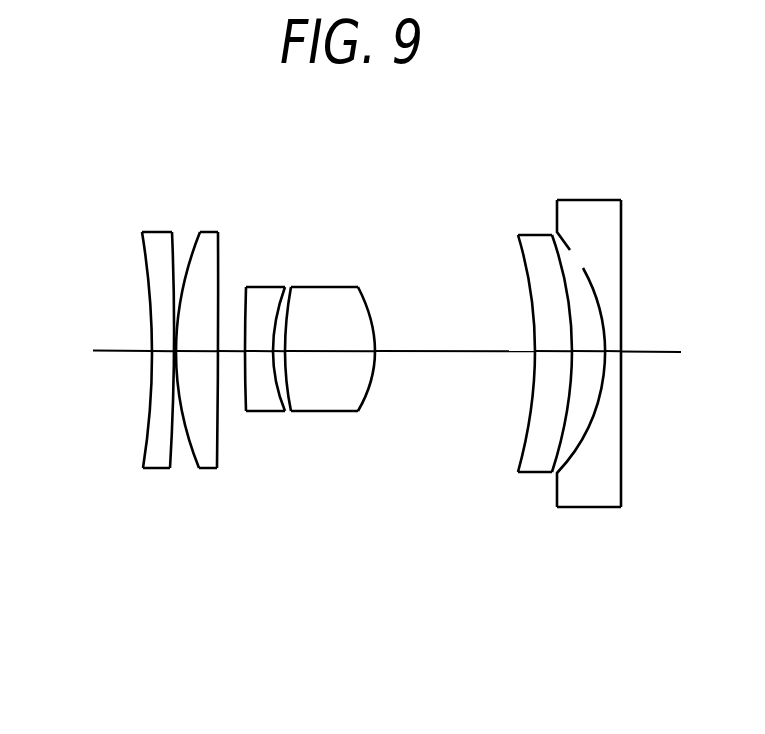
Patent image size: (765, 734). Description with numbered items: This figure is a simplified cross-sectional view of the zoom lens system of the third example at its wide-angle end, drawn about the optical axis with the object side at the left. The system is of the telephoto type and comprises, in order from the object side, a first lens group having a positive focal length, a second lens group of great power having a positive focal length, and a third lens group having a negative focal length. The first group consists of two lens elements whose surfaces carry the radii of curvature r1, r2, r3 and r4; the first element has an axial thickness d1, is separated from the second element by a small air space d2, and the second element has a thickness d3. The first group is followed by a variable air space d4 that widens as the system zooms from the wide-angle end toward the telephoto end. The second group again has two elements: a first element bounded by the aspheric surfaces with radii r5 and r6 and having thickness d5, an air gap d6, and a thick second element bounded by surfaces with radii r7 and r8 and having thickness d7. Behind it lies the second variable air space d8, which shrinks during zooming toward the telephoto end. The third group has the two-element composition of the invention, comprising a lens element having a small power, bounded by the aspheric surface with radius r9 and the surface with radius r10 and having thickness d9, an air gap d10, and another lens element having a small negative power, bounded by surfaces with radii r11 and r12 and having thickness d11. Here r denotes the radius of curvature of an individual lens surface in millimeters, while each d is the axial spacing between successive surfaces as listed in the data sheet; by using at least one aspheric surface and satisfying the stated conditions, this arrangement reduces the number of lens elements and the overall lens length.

The radius of curvature of first lens surface r1 is at (142, 231).
The radius of curvature of second lens surface r2 is at (172, 231).
The radius of curvature of third lens surface r3 is at (200, 231).
The radius of curvature of fourth lens surface r4 is at (218, 231).
The radius of curvature of fifth lens surface r5 is at (247, 286).
The radius of curvature of sixth lens surface r6 is at (285, 286).
The radius of curvature of seventh lens surface r7 is at (291, 286).
The radius of curvature of eighth lens surface r8 is at (359, 286).
The radius of curvature of ninth lens surface r9 is at (518, 234).
The radius of curvature of tenth lens surface r10 is at (552, 234).
The radius of curvature of eleventh lens surface r11 is at (557, 199).
The radius of curvature of twelfth lens surface r12 is at (621, 199).
The axial thickness of first lens element d1 is at (162, 352).
The axial air space between first and second lens elements d2 is at (177, 352).
The axial thickness of second lens element d3 is at (197, 352).
The variable air space between first and second lens groups d4 is at (227, 352).
The axial thickness of third lens element d5 is at (257, 352).
The axial air space between third and fourth lens elements d6 is at (282, 352).
The axial thickness of fourth lens element d7 is at (320, 352).
The variable air space between second and third lens groups d8 is at (447, 352).
The axial thickness of fifth lens element d9 is at (550, 352).
The axial air space between fifth and sixth lens elements d10 is at (582, 352).
The axial thickness of sixth lens element d11 is at (615, 352).